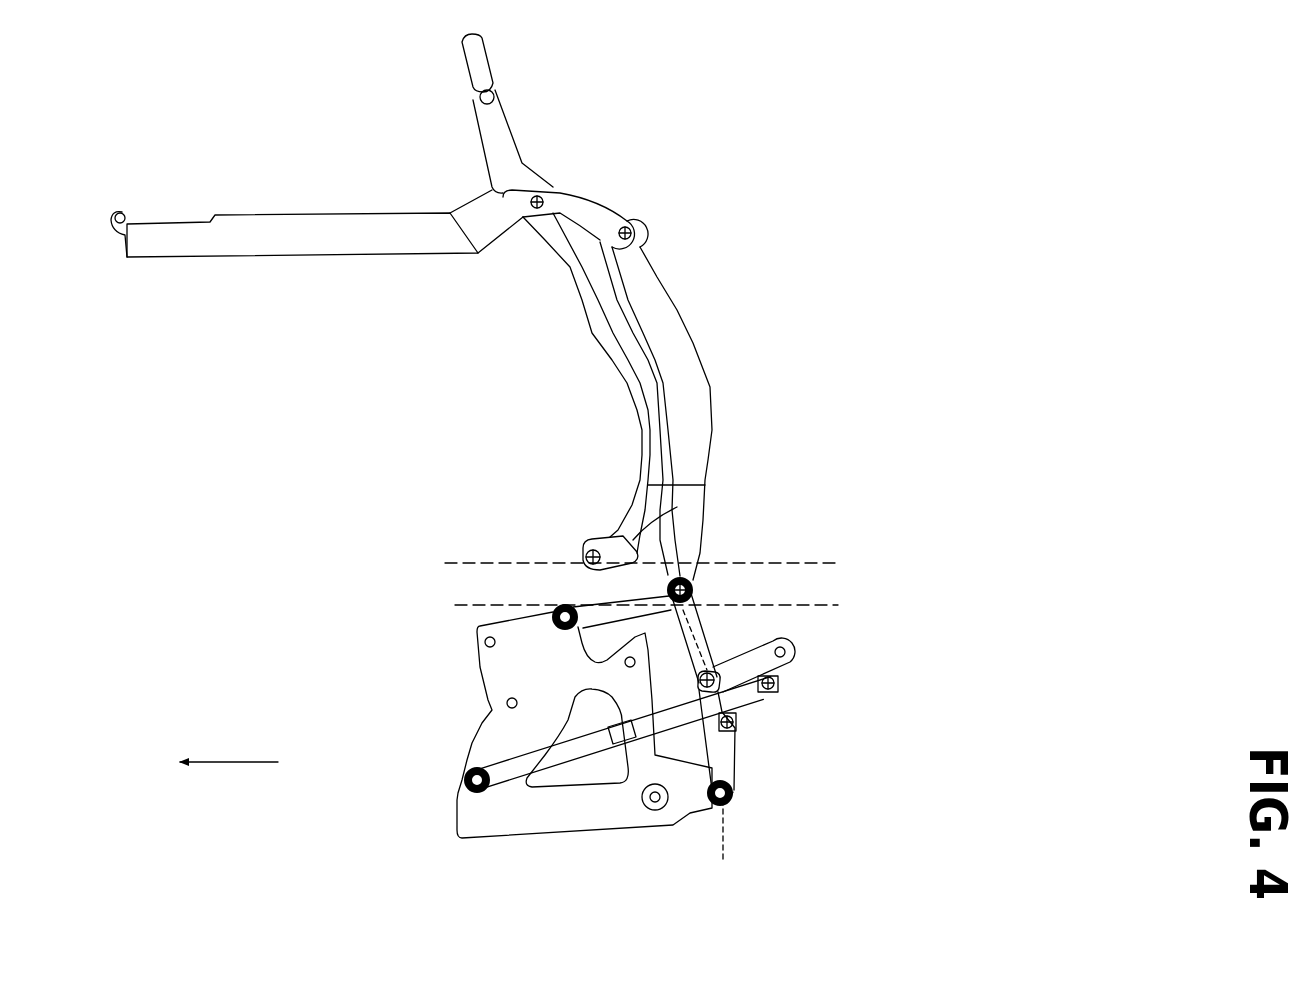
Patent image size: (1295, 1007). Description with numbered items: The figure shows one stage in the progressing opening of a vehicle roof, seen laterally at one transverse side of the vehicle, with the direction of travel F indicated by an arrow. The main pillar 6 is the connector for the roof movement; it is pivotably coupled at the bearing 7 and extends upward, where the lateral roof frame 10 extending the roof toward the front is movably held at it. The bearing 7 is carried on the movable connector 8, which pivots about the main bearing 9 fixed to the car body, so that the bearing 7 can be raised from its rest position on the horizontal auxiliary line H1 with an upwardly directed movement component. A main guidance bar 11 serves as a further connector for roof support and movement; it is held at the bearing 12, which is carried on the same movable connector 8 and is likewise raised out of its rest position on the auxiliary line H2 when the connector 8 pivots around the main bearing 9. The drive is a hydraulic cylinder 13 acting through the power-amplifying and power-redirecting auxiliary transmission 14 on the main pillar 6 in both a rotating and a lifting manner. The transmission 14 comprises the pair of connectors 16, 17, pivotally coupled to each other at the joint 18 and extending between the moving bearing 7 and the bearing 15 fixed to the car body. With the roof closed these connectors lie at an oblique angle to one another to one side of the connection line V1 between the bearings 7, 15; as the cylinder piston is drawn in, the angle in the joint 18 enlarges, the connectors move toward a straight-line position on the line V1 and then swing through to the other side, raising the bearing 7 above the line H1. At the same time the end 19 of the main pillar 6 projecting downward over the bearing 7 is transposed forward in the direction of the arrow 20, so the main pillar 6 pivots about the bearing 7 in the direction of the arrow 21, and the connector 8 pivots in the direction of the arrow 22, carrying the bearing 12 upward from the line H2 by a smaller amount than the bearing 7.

The main pillar 6 is at (680, 498).
The bearing 7 is at (697, 587).
The movable connector 8 is at (553, 600).
The main bearing 9 is at (556, 604).
The lateral roof frame 10 is at (400, 233).
The main guidance bar 11 is at (617, 347).
The bearing 12 is at (587, 548).
The hydraulic cylinder 13 is at (582, 743).
The auxiliary transmission 14 is at (803, 668).
The bearing 15 is at (733, 790).
The connector 16 is at (730, 745).
The connector 17 is at (727, 660).
The joint 18 is at (745, 718).
The end of the main pillar 19 is at (710, 673).
The arrow 20 is at (659, 675).
The arrow 21 is at (761, 506).
The arrow 22 is at (603, 583).
The auxiliary line H1 is at (838, 607).
The auxiliary line H2 is at (833, 563).
The connection line V1 is at (727, 830).
The direction of travel F is at (230, 760).